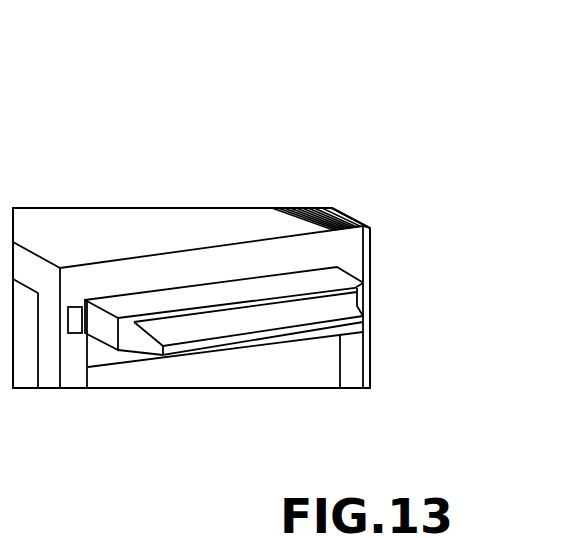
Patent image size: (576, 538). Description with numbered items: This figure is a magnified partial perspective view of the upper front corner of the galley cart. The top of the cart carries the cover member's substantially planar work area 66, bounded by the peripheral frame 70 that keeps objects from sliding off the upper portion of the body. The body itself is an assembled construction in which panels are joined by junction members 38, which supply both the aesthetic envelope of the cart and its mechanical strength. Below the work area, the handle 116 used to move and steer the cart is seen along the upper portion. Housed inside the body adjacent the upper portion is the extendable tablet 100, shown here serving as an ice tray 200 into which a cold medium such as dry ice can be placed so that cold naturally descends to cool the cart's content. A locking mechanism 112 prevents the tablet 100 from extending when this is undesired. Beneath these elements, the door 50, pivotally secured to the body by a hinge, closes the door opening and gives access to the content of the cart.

The work area 66 is at (118, 178).
The junction members 38 is at (35, 270).
The peripheral frame 70 is at (45, 318).
The handle 116 is at (157, 272).
The tablet 100 is at (310, 282).
The ice tray 200 is at (256, 290).
The locking mechanism 112 is at (75, 334).
The door 50 is at (272, 370).